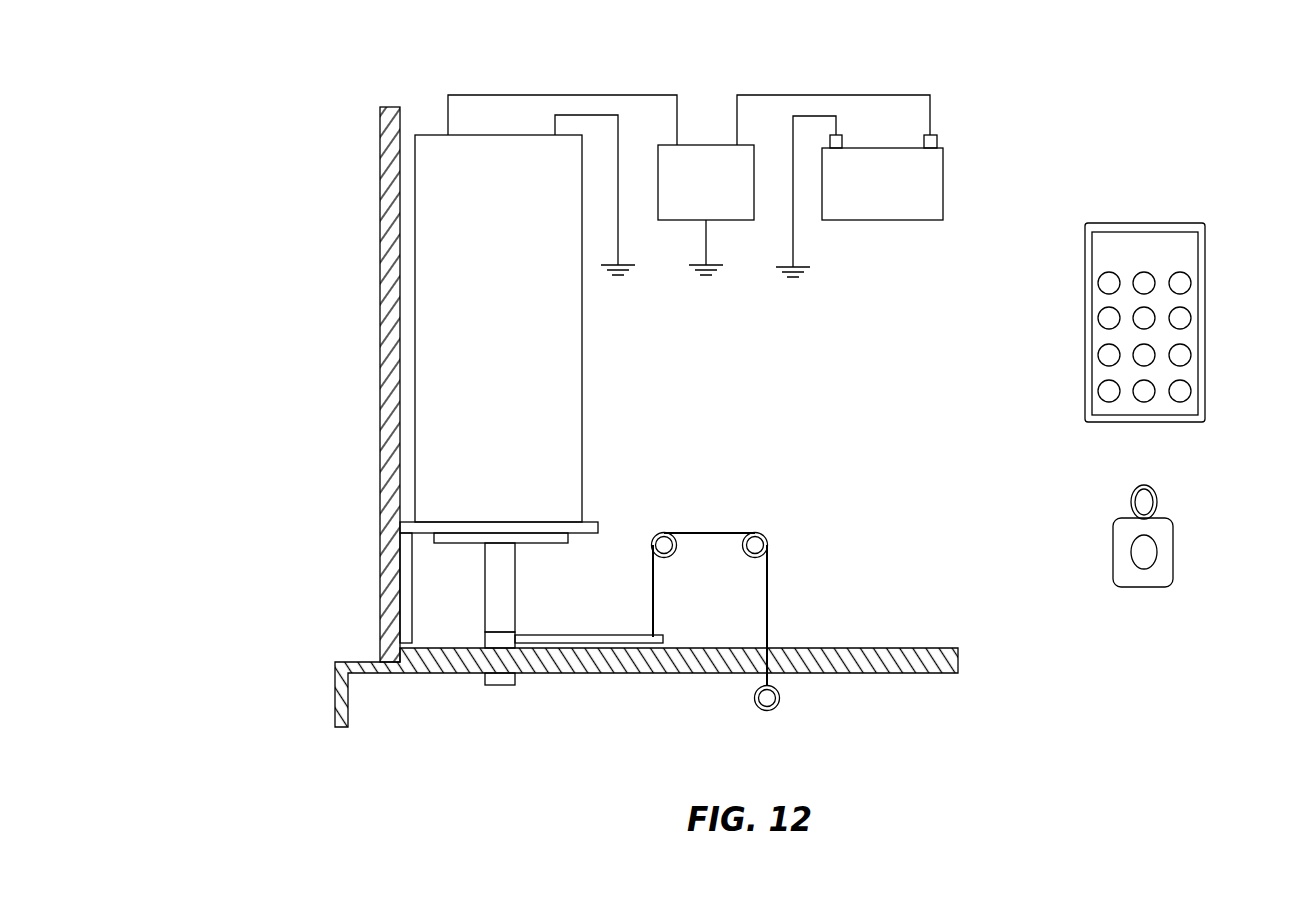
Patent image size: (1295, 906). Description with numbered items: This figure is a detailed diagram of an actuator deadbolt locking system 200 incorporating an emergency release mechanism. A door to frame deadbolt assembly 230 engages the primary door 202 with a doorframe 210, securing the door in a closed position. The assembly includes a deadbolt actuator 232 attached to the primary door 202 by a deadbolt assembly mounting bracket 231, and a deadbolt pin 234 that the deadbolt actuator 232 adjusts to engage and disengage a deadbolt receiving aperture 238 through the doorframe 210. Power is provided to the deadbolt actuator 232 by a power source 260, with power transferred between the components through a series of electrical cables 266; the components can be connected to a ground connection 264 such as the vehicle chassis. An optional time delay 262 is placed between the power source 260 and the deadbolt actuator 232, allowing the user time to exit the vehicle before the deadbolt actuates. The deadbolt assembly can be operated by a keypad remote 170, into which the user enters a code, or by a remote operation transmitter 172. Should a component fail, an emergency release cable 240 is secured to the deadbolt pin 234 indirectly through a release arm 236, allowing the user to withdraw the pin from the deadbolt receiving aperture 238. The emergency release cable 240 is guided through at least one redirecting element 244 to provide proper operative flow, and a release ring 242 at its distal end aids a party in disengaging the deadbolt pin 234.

The locking system 200 is at (290, 112).
The primary door 202 is at (380, 328).
The doorframe 210 is at (336, 706).
The door to frame deadbolt assembly 230 is at (634, 402).
The deadbolt assembly mounting bracket 231 is at (401, 575).
The deadbolt actuator 232 is at (583, 373).
The deadbolt pin 234 is at (505, 678).
The release arm 236 is at (580, 635).
The deadbolt receiving aperture 238 is at (484, 678).
The emergency release cable 240 is at (769, 610).
The release ring 242 is at (777, 707).
The redirecting element 244 is at (768, 542).
The power source 260 is at (943, 220).
The time delay 262 is at (710, 145).
The ground connection 264 is at (798, 277).
The electrical cables 266 is at (852, 95).
The keypad remote 170 is at (1198, 230).
The remote operation transmitter 172 is at (1170, 584).